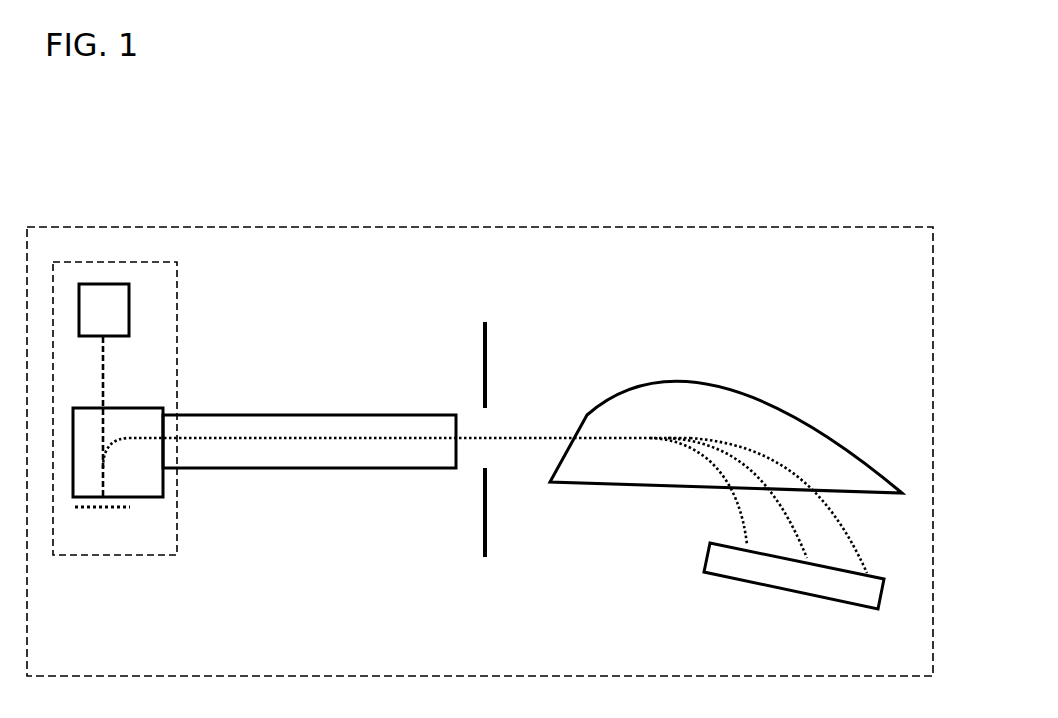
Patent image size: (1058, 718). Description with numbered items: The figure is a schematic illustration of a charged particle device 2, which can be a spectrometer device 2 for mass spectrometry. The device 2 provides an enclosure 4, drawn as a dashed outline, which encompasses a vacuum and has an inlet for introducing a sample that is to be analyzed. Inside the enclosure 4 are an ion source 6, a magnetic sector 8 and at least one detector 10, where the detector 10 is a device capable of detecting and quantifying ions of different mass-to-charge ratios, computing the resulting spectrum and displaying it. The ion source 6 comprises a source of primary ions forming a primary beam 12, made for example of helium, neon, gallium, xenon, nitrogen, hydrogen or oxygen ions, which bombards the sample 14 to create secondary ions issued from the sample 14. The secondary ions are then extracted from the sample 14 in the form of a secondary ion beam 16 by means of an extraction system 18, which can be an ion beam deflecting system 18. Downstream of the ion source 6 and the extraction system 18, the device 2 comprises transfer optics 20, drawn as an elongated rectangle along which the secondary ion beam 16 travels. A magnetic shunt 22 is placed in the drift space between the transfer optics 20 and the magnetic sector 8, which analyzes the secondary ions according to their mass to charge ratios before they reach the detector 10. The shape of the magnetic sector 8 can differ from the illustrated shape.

The charged particle device 2 is at (315, 176).
The enclosure 4 is at (578, 224).
The ion source 6 is at (177, 322).
The magnetic sector 8 is at (793, 358).
The detector 10 is at (773, 572).
The primary beam 12 is at (103, 380).
The sample 14 is at (118, 512).
The secondary ion beam 16 is at (428, 436).
The extraction system 18 is at (118, 452).
The transfer optics 20 is at (312, 495).
The magnetic shunt 22 is at (487, 540).